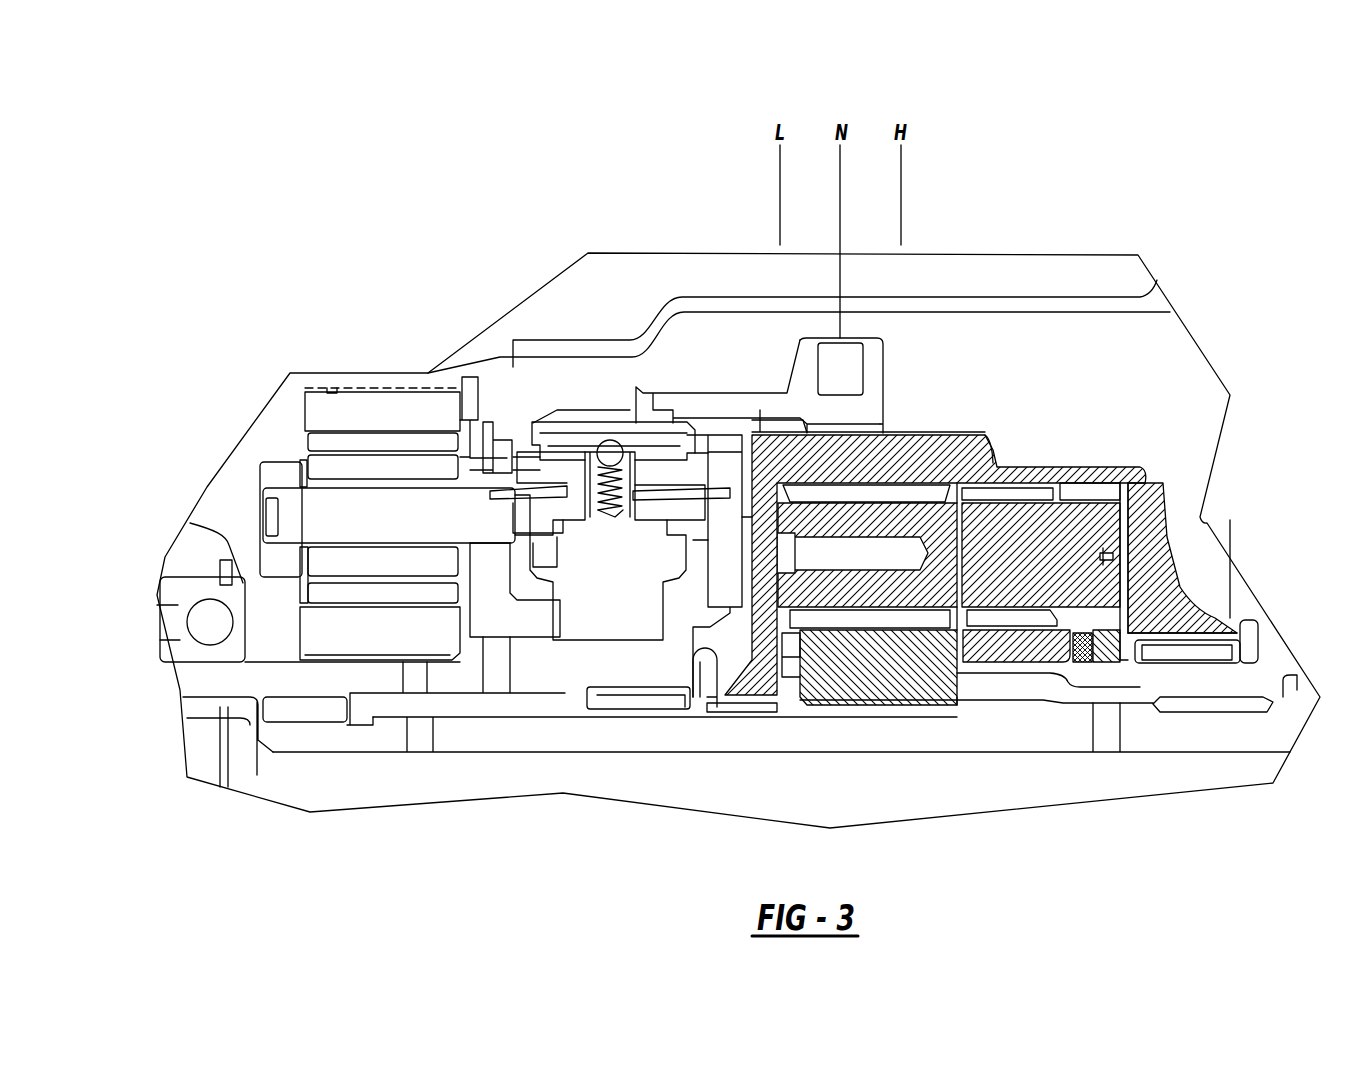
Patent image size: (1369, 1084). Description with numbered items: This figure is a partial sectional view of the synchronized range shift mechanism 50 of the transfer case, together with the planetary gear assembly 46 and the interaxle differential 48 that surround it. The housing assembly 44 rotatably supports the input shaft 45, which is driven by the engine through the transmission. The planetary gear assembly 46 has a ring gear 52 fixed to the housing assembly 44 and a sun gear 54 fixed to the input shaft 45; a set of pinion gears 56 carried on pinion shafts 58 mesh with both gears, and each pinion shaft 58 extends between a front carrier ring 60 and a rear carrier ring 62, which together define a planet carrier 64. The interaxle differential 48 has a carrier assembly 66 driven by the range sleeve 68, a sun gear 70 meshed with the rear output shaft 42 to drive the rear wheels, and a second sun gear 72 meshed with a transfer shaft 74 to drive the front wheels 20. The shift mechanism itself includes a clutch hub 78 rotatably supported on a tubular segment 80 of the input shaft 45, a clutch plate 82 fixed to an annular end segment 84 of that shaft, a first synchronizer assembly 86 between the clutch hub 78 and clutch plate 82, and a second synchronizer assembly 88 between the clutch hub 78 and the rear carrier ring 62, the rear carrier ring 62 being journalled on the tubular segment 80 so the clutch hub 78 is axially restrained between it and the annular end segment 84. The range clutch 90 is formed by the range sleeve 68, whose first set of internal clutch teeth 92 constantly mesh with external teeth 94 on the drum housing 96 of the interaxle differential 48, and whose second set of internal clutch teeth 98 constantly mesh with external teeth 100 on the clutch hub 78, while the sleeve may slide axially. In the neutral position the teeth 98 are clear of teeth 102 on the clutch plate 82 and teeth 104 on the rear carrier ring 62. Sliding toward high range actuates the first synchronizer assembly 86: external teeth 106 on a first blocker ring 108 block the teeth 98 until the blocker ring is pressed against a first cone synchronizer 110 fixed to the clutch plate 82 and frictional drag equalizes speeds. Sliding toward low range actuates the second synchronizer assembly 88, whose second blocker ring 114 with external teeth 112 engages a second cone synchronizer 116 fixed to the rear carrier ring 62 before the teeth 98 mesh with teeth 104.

The front wheels 20 is at (1040, 226).
The rear output shaft 42 is at (1205, 737).
The housing assembly 44 is at (1167, 293).
The input shaft 45 is at (203, 680).
The planetary gear assembly 46 is at (295, 416).
The interaxle differential 48 is at (1112, 436).
The synchronized range shift mechanism 50 is at (895, 366).
The ring gear 52 is at (356, 412).
The sun gear 54 is at (378, 640).
The pinion gears 56 is at (320, 468).
The pinion shafts 58 is at (372, 527).
The front carrier ring 60 is at (300, 475).
The rear carrier ring 62 is at (510, 618).
The planet carrier 64 is at (255, 501).
The carrier assembly 66 is at (1113, 578).
The range sleeve 68 is at (757, 405).
The sun gear 70 is at (876, 678).
The second sun gear 72 is at (1022, 658).
The transfer shaft 74 is at (1070, 688).
The clutch hub 78 is at (619, 598).
The tubular segment 80 is at (540, 672).
The clutch plate 82 is at (733, 593).
The annular end segment 84 is at (693, 627).
The first synchronizer assembly 86 is at (648, 551).
The second synchronizer assembly 88 is at (575, 552).
The range clutch 90 is at (727, 390).
The first set of internal clutch teeth 92 is at (877, 427).
The external teeth 94 is at (967, 433).
The drum housing 96 is at (1123, 467).
The second set of internal clutch teeth 98 is at (547, 457).
The external teeth 100 is at (567, 453).
The teeth 102 is at (720, 428).
The teeth 104 is at (500, 428).
The external teeth 106 is at (700, 432).
The first blocker ring 108 is at (636, 387).
The first cone synchronizer 110 is at (643, 453).
The external teeth 112 is at (520, 440).
The second blocker ring 114 is at (547, 482).
The second cone synchronizer 116 is at (612, 503).